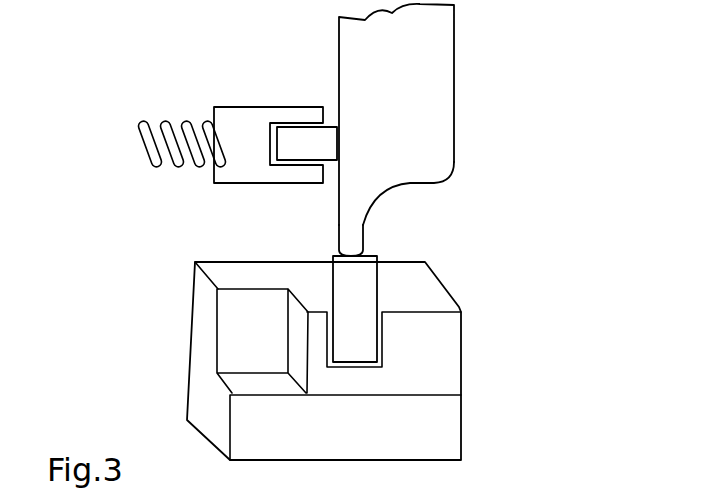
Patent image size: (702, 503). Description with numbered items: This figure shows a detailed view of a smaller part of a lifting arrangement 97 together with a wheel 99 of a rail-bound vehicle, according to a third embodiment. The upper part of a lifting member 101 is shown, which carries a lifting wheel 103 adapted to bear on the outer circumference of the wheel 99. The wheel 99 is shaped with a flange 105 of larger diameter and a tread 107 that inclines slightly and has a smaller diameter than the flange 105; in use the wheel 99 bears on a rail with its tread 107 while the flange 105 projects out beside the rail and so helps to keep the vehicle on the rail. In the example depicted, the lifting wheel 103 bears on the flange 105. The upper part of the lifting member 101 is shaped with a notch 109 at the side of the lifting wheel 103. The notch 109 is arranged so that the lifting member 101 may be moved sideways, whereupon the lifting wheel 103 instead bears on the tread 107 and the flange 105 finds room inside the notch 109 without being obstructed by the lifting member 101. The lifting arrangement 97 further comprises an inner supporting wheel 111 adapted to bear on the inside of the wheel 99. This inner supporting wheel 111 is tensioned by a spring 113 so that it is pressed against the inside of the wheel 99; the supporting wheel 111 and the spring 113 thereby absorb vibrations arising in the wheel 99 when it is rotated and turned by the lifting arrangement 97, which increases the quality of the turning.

The lifting arrangement 97 is at (437, 353).
The wheel 99 is at (427, 75).
The lifting member 101 is at (420, 327).
The lifting wheel 103 is at (362, 343).
The flange 105 is at (347, 238).
The tread 107 is at (403, 188).
The notch 109 is at (248, 328).
The inner supporting wheel 111 is at (302, 138).
The spring 113 is at (167, 140).